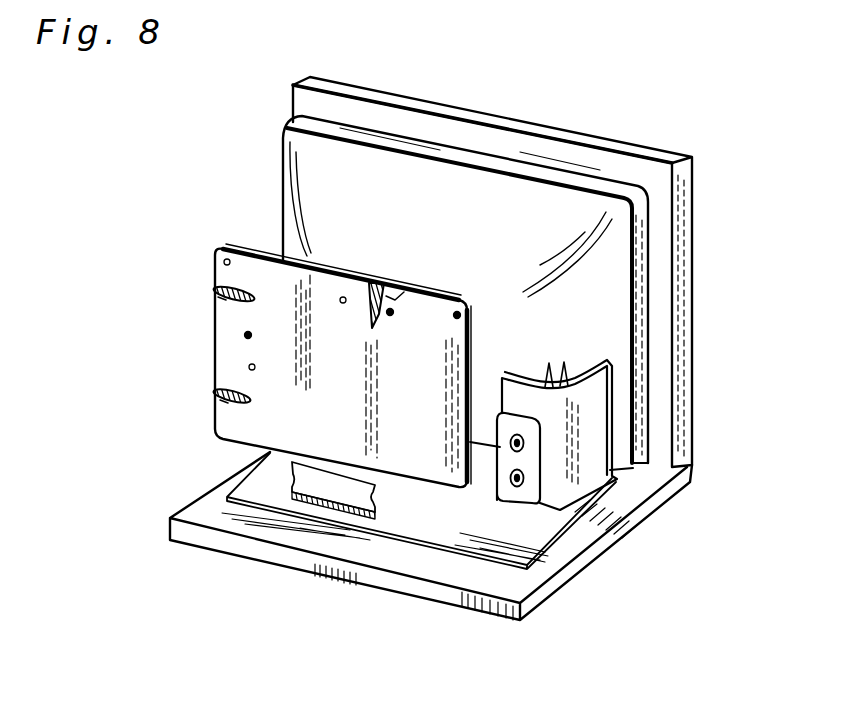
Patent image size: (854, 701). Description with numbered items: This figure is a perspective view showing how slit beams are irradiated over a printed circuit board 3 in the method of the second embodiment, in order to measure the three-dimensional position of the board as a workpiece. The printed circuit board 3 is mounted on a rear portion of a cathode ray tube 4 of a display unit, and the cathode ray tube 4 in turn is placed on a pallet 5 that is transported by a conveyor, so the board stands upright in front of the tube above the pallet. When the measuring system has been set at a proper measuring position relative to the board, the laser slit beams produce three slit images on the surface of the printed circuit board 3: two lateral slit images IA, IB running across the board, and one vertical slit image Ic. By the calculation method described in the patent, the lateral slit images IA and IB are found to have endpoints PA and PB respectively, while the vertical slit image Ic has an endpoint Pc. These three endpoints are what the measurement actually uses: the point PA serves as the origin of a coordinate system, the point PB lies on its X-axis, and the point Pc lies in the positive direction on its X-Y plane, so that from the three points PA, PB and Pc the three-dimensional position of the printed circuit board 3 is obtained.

The printed circuit board 3 is at (286, 432).
The cathode ray tube 4 is at (518, 197).
The pallet 5 is at (605, 537).
The endpoint PA is at (215, 290).
The lateral slit image IA is at (226, 300).
The endpoint PB is at (215, 392).
The lateral slit image IB is at (228, 403).
The endpoint Pc is at (381, 283).
The vertical slit image Ic is at (420, 258).